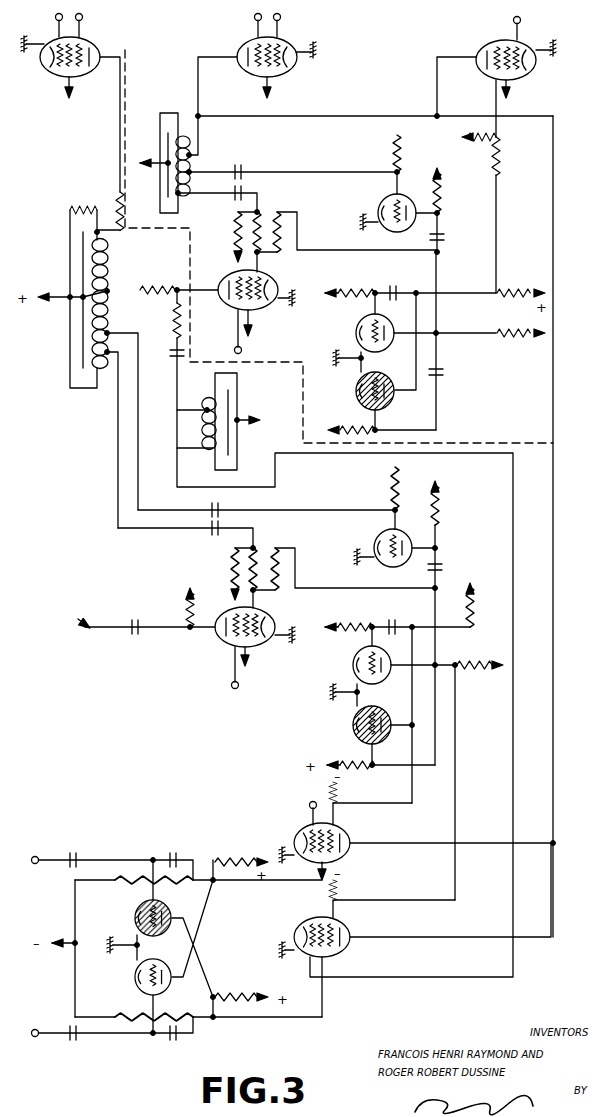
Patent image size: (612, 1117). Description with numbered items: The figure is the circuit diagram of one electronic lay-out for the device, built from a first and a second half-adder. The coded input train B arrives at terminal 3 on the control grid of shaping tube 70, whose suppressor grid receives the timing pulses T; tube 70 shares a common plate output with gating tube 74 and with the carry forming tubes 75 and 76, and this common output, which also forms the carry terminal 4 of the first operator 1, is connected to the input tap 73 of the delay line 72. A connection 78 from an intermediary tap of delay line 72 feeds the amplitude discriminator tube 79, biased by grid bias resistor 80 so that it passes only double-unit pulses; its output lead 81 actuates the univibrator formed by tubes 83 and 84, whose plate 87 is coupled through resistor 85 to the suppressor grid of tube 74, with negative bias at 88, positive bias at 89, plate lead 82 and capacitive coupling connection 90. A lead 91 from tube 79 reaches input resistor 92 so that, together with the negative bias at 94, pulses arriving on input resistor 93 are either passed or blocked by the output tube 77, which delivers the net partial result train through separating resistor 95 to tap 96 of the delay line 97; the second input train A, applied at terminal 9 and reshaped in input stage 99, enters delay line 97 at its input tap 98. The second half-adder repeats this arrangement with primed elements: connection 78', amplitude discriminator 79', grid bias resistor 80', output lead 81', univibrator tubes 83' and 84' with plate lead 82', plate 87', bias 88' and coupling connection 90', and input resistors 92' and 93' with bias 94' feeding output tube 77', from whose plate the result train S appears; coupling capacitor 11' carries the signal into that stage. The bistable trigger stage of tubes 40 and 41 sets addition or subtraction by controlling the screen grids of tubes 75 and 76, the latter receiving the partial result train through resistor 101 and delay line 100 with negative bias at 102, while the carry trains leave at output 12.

The operator 1 is at (125, 105).
The terminal 3 is at (271, 26).
The input terminal 4 is at (454, 99).
The terminal 9 is at (63, 26).
The coded output train S is at (141, 600).
The input coupling capacitor 11' is at (117, 636).
The output 12 is at (449, 846).
The tube 40 is at (132, 988).
The tube 41 is at (134, 918).
The tube 70 is at (280, 76).
The delay line 72 is at (161, 183).
The input tap 73 is at (198, 129).
The tube 74 is at (513, 78).
The carry forming stage 75 is at (343, 856).
The subtraction carry forming stage 76 is at (342, 954).
The output tube 77 is at (256, 317).
The output tube 77' is at (248, 653).
The connection 78 is at (292, 166).
The connection 78' is at (266, 505).
The tube 79 is at (395, 202).
The amplitude discriminator 79' is at (392, 538).
The grid bias resistor 80 is at (384, 148).
The grid bias resistor 80' is at (385, 484).
The output lead 81 is at (444, 210).
The output lead 81' is at (444, 613).
The plate lead 82 is at (489, 342).
The plate lead 82' is at (469, 771).
The tube 83 is at (383, 322).
The tube 83' is at (383, 655).
The tube 84 is at (362, 391).
The tube 84' is at (371, 736).
The resistor 85 is at (482, 211).
The plate 87 is at (445, 333).
The plate 87' is at (443, 683).
The negative bias 88 is at (341, 286).
The negative bias 88' is at (339, 620).
The positive bias 89 is at (363, 427).
The capacitive coupling connection 90 is at (395, 283).
The capacitive coupling connection 90' is at (392, 616).
The lead 91 is at (340, 248).
The input resistor 92 is at (278, 232).
The input resistor 92' is at (344, 578).
The input resistor 93 is at (228, 229).
The input resistor 93' is at (199, 564).
The negative bias 94 is at (232, 241).
The negative bias 94' is at (230, 577).
The separating resistor 95 is at (179, 282).
The input terminal or tap 96 is at (84, 286).
The delay line 97 is at (83, 262).
The input tap 98 is at (103, 234).
The input stage 99 is at (74, 80).
The delay line 100 is at (233, 409).
The resistor 101 is at (174, 332).
The negative bias potential 102 is at (242, 424).